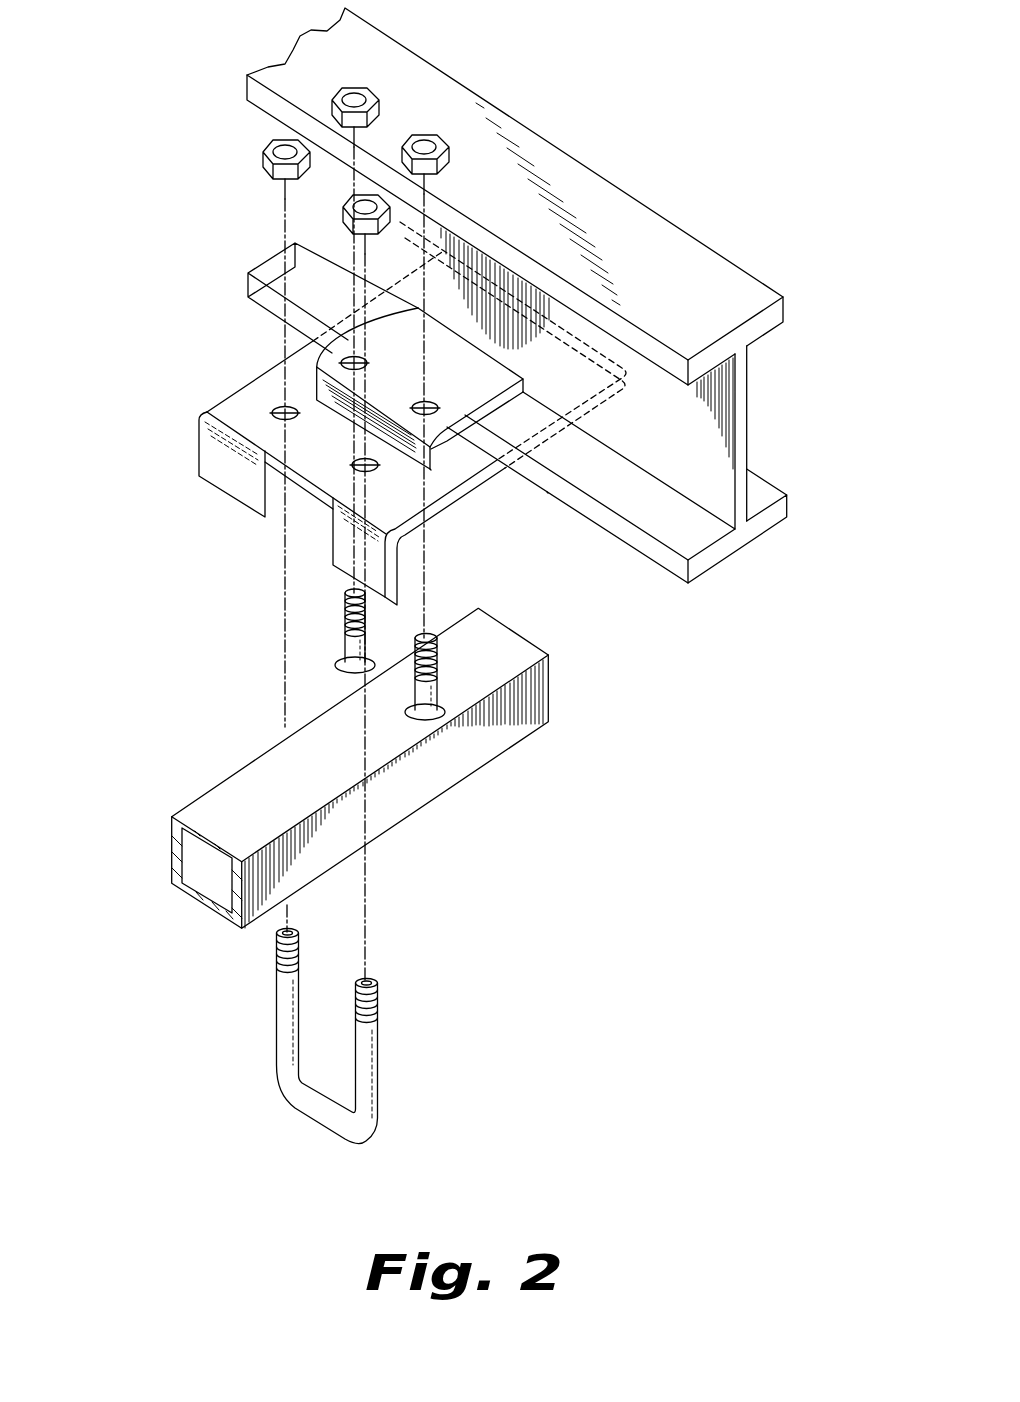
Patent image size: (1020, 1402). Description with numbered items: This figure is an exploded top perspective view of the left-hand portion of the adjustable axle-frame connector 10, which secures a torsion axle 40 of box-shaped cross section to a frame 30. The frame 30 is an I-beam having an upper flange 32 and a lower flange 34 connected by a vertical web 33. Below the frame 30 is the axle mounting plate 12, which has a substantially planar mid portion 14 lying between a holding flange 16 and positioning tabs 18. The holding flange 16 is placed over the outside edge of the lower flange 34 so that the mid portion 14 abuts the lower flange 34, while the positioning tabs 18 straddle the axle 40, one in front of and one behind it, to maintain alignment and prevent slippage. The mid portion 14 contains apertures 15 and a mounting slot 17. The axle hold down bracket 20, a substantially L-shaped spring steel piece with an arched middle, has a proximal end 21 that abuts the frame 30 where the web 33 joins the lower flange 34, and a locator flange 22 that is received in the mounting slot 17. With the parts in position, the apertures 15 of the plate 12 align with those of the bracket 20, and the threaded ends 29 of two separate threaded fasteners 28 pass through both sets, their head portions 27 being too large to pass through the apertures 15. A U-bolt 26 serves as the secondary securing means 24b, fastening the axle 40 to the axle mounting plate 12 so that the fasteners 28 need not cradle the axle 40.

The adjustable axle-frame connector 10 is at (157, 313).
The axle mounting plate 12 is at (478, 512).
The substantially planar mid portion 14 is at (437, 471).
The apertures 15 is at (350, 466).
The holding flange 16 is at (568, 327).
The mounting slot 17 is at (547, 492).
The positioning tabs 18 is at (239, 494).
The axle hold down bracket 20 is at (409, 366).
The proximal end 21 is at (507, 364).
The locator flange 22 is at (447, 450).
The secondary securing means 24b is at (424, 1020).
The U-bolt 26 is at (370, 1083).
The head portions 27 is at (361, 681).
The threaded fasteners 28 is at (440, 139).
The threaded ends 29 is at (432, 638).
The frame 30 is at (809, 342).
The upper flange 32 is at (791, 308).
The vertical web 33 is at (742, 403).
The lower flange 34 is at (730, 547).
The torsion axle 40 is at (457, 763).